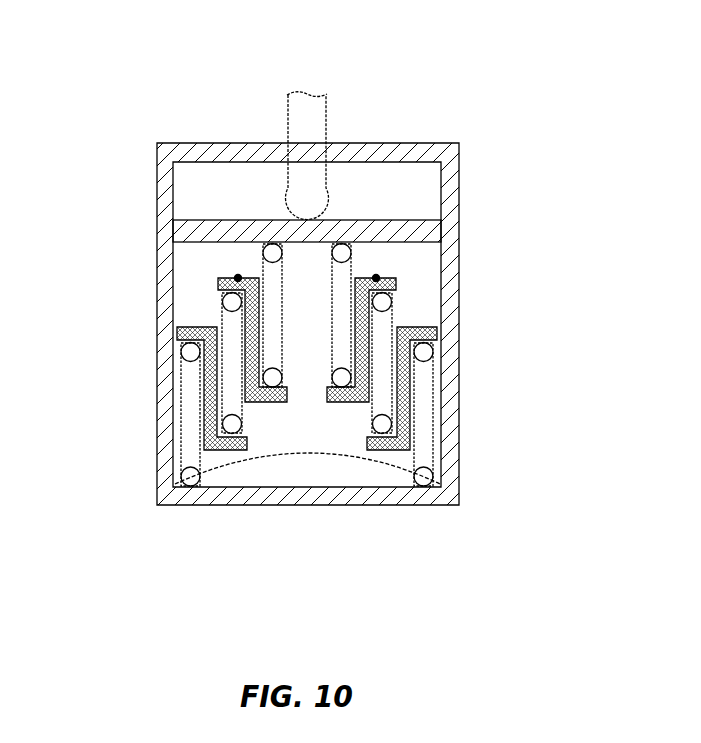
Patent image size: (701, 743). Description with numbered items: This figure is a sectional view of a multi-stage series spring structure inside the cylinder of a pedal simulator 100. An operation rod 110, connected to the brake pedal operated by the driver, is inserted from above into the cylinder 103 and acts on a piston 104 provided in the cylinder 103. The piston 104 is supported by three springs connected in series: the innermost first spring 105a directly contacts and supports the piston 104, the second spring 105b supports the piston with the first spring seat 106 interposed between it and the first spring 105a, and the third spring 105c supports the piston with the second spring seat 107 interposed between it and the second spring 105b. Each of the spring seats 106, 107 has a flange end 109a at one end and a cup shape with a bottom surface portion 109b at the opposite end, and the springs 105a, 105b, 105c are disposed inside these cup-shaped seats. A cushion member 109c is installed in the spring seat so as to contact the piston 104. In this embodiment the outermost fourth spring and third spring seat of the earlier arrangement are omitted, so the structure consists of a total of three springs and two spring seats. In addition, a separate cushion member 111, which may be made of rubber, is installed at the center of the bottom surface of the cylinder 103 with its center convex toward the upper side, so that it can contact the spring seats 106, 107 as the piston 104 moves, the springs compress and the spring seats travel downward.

The pedal simulator 100 is at (459, 122).
The cylinder 103 is at (455, 428).
The piston 104 is at (442, 222).
The first spring 105a is at (352, 266).
The second spring 105b is at (396, 313).
The third spring 105c is at (433, 362).
The first spring seat 106 is at (220, 352).
The second spring seat 107 is at (212, 412).
The flange end 109a is at (238, 278).
The bottom surface portion 109b is at (273, 402).
The cushion member 109c is at (238, 278).
The operation rod 110 is at (323, 119).
The separate cushion member 111 is at (337, 470).